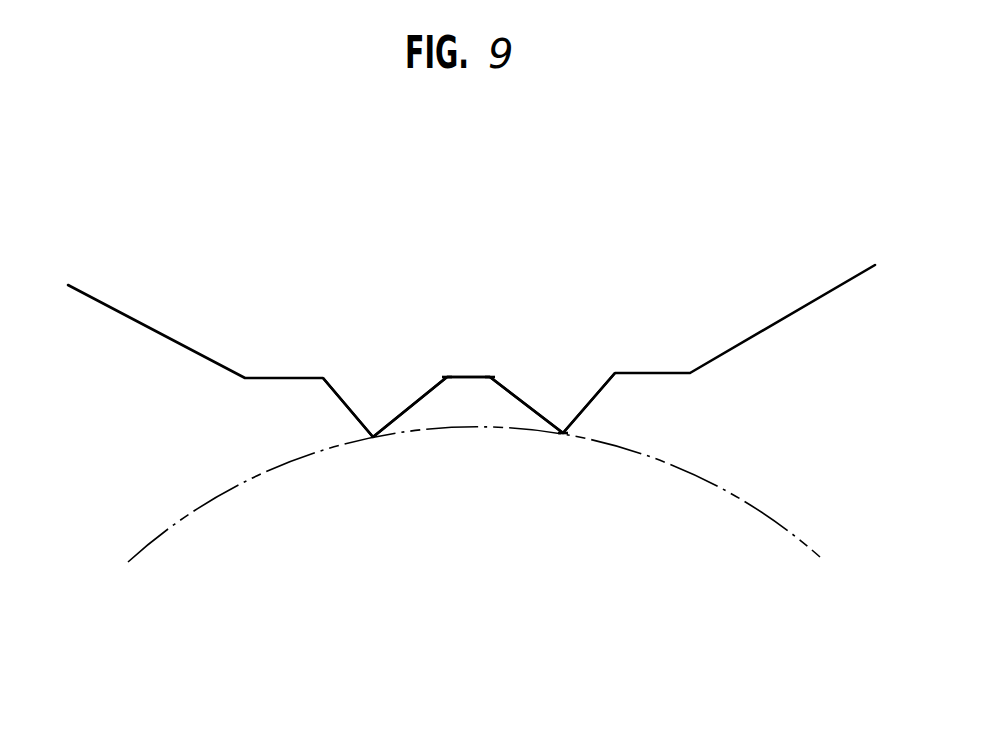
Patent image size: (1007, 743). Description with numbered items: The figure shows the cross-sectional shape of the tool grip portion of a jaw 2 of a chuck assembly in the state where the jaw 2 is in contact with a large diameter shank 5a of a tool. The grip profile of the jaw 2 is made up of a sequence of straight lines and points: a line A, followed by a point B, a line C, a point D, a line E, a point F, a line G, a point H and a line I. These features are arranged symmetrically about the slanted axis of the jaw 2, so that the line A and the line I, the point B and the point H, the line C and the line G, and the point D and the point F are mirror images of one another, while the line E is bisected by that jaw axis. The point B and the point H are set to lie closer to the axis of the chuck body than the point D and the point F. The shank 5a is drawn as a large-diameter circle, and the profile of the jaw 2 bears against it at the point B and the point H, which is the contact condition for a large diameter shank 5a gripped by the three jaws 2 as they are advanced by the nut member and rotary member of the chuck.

The jaw 2 is at (793, 313).
The shank 5a is at (733, 495).
The line A is at (333, 395).
The point B is at (373, 437).
The line C is at (405, 407).
The point D is at (447, 376).
The line E is at (467, 375).
The point F is at (492, 375).
The line G is at (522, 398).
The point H is at (563, 433).
The line I is at (597, 393).